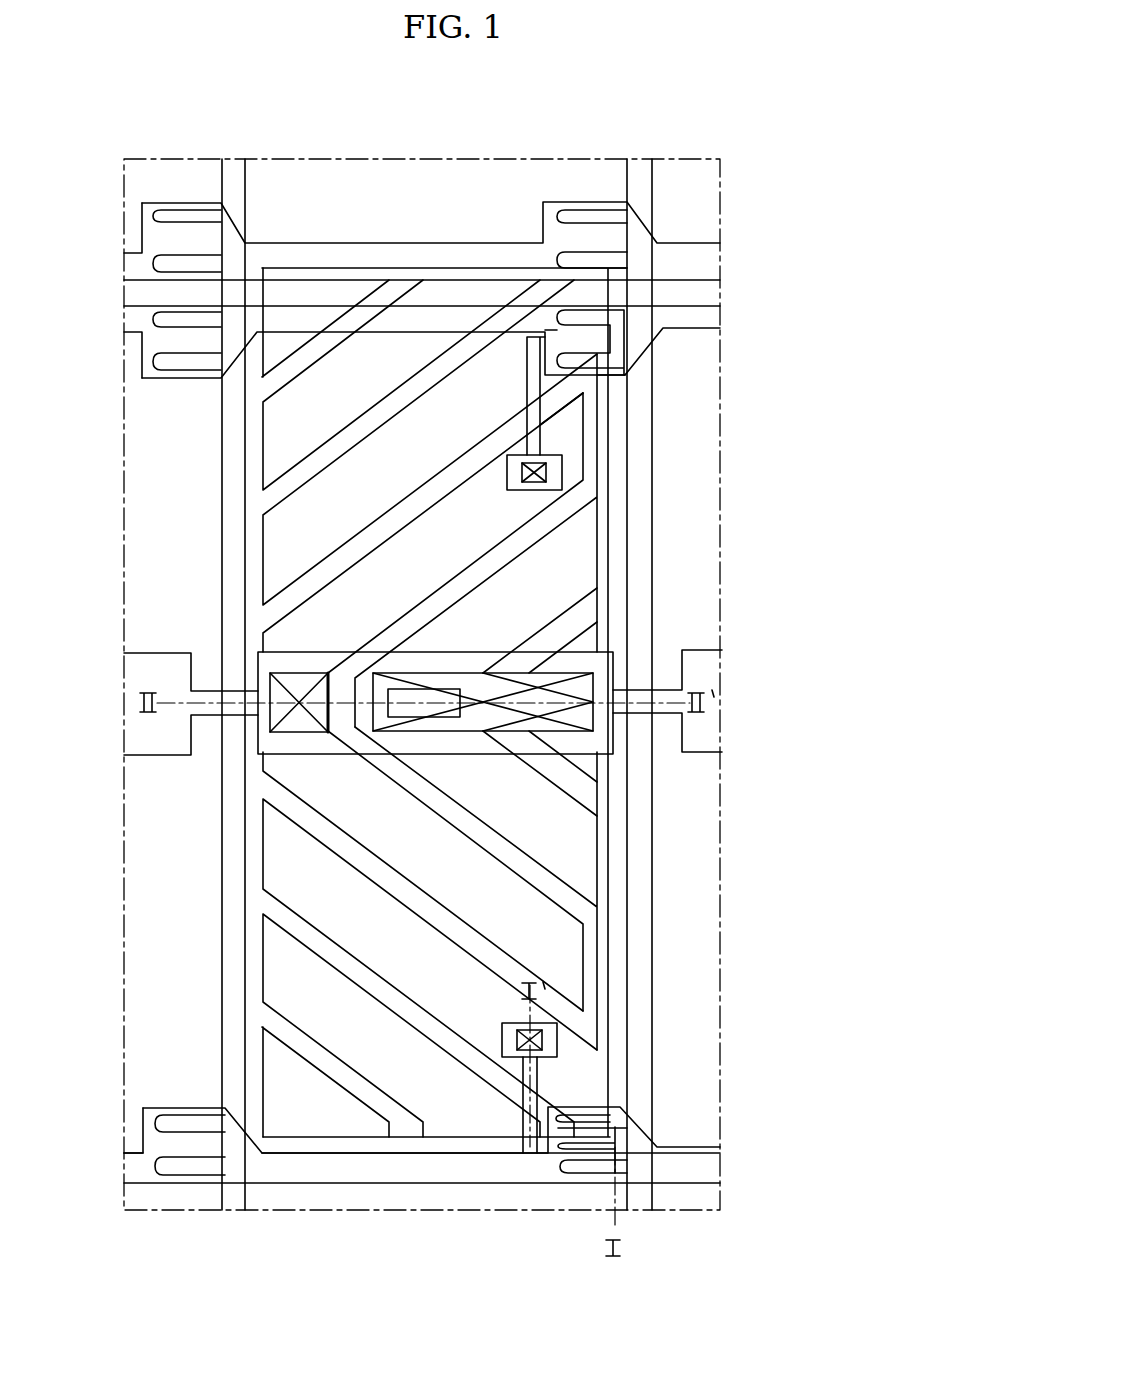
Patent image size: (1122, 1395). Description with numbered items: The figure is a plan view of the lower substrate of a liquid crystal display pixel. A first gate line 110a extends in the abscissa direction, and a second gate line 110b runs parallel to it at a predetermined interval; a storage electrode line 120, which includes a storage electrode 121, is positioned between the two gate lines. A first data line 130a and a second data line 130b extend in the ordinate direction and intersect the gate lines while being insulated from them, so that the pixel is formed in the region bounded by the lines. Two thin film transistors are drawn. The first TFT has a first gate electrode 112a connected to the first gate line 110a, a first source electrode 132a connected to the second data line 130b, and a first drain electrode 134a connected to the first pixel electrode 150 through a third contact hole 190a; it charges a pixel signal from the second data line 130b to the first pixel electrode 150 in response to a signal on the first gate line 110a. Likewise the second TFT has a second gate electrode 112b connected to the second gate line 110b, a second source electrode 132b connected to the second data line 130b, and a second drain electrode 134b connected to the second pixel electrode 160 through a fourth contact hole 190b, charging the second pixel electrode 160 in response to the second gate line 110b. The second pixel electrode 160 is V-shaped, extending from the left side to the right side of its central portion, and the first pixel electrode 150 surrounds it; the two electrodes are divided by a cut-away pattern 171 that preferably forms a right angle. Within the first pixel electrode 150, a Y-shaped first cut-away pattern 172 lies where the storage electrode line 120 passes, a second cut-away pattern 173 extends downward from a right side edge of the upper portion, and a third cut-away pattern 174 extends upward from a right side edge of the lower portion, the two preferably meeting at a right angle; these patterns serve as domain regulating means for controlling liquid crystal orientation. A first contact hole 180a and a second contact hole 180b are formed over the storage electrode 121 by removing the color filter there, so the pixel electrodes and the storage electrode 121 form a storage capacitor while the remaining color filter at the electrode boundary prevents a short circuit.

The first gate line 110a is at (712, 1160).
The second gate line 110b is at (717, 319).
The first gate electrode 112a is at (597, 1077).
The second gate electrode 112b is at (605, 377).
The storage electrode line 120 is at (705, 735).
The storage electrode 121 is at (712, 690).
The first data line 130a is at (236, 170).
The second data line 130b is at (634, 170).
The first source electrode 132a is at (607, 1160).
The second source electrode 132b is at (600, 320).
The first drain electrode 134a is at (553, 1132).
The second drain electrode 134b is at (605, 362).
The first pixel electrode 150 is at (573, 562).
The second pixel electrode 160 is at (573, 425).
The cut-away pattern 171 is at (555, 885).
The first cut-away pattern 172 is at (585, 800).
The second cut-away pattern 173 is at (393, 398).
The third cut-away pattern 174 is at (440, 1040).
The first contact hole 180a is at (298, 688).
The second contact hole 180b is at (530, 680).
The third contact hole 190a is at (513, 1043).
The fourth contact hole 190b is at (560, 460).